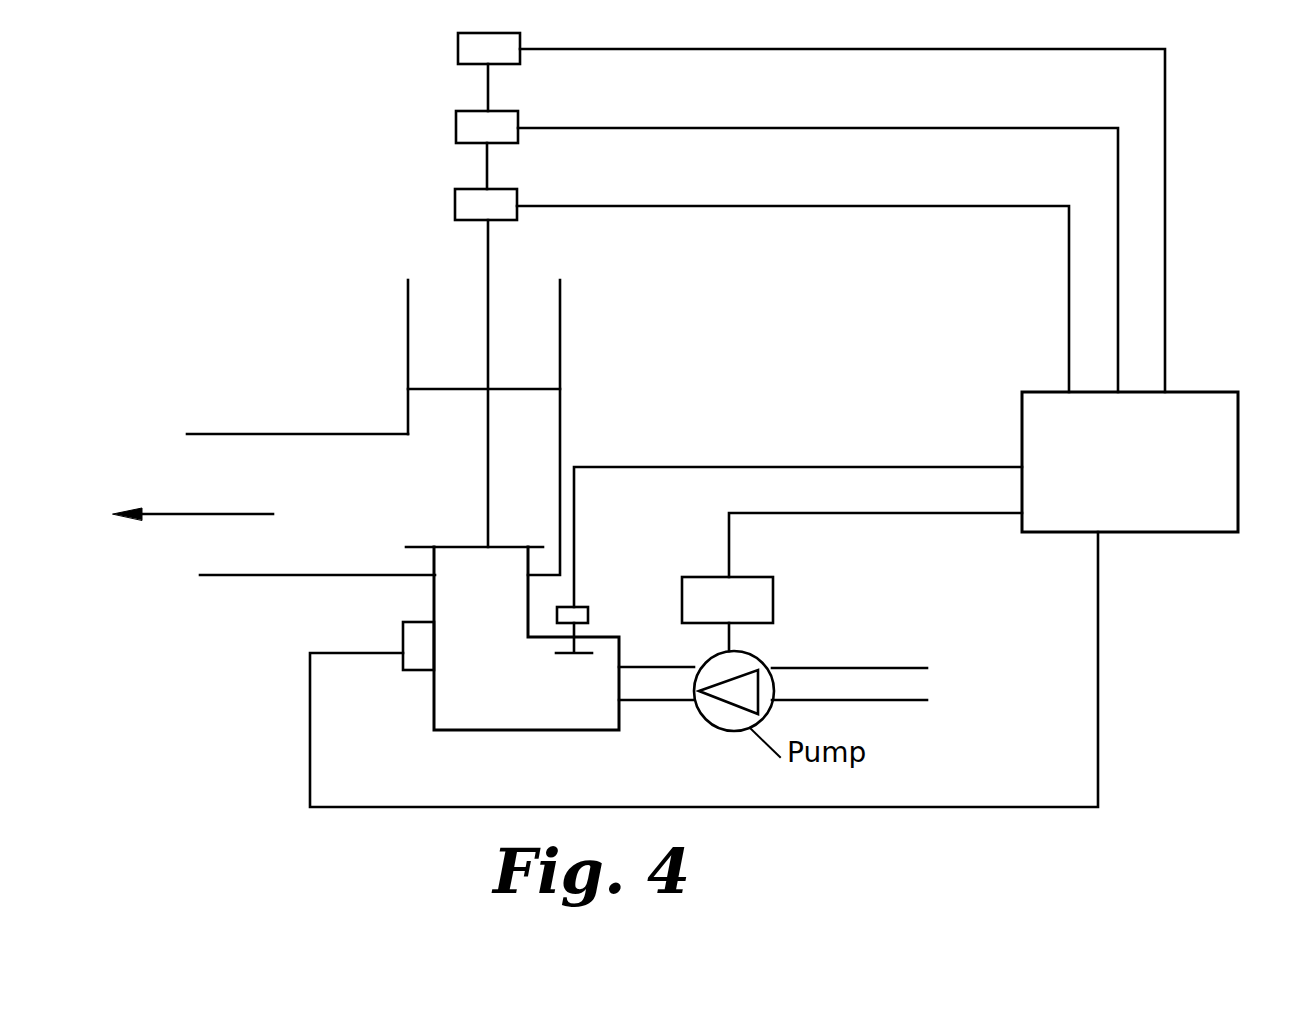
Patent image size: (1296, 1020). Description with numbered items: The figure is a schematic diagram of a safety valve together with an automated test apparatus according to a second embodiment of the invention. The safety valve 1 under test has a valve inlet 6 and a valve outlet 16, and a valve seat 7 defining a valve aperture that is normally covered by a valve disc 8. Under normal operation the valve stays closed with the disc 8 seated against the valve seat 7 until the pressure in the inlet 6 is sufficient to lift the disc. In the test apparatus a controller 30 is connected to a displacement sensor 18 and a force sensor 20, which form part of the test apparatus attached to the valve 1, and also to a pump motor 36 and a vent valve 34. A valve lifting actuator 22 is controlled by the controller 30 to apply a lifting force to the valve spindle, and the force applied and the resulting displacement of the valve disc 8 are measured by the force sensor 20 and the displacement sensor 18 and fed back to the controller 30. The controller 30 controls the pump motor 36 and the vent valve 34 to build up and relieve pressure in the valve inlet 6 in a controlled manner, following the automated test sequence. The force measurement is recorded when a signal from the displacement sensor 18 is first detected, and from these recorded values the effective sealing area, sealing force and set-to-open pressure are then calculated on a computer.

The safety valve 1 is at (561, 342).
The valve inlet 6 is at (450, 705).
The valve seat 7 is at (437, 556).
The valve disc 8 is at (465, 546).
The valve outlet 16 is at (296, 478).
The displacement sensor 18 is at (466, 205).
The force sensor 20 is at (468, 128).
The valve lifting actuator 22 is at (470, 49).
The controller 30 is at (1236, 422).
The vent valve 34 is at (590, 606).
The pump motor 36 is at (773, 608).